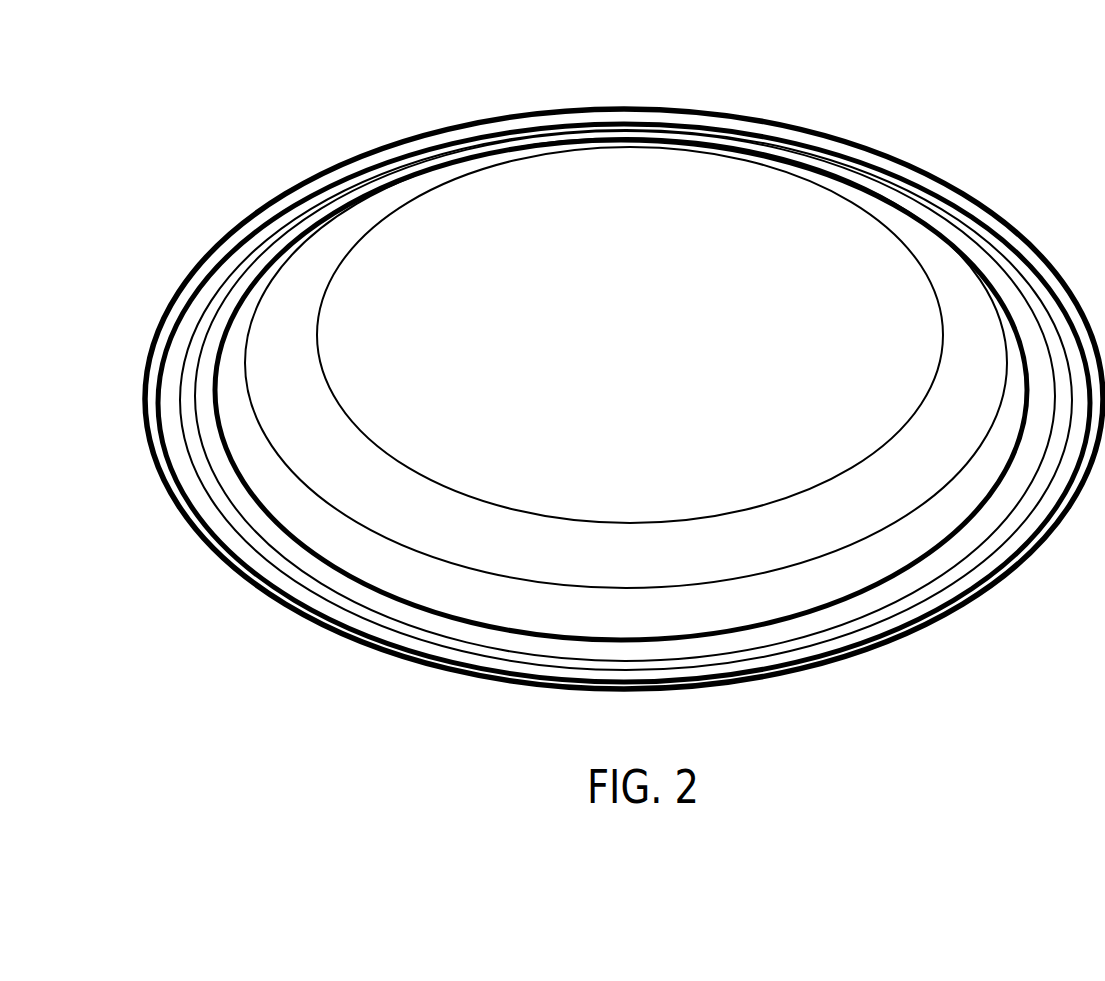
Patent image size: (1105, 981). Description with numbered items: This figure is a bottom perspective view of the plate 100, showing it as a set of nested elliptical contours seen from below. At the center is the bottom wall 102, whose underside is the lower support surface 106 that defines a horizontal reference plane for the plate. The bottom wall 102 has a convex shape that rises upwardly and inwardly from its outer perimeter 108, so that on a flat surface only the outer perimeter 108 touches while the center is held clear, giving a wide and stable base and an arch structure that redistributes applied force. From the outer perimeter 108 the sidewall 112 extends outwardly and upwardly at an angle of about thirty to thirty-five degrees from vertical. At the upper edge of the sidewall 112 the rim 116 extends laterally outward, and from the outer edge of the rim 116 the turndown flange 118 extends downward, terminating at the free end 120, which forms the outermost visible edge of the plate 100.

The plate 100 is at (957, 103).
The bottom wall 102 is at (817, 315).
The lower support surface 106 is at (610, 348).
The outer perimeter 108 is at (460, 178).
The sidewall 112 is at (230, 351).
The rim 116 is at (170, 427).
The turndown flange 118 is at (168, 482).
The free end 120 is at (233, 228).